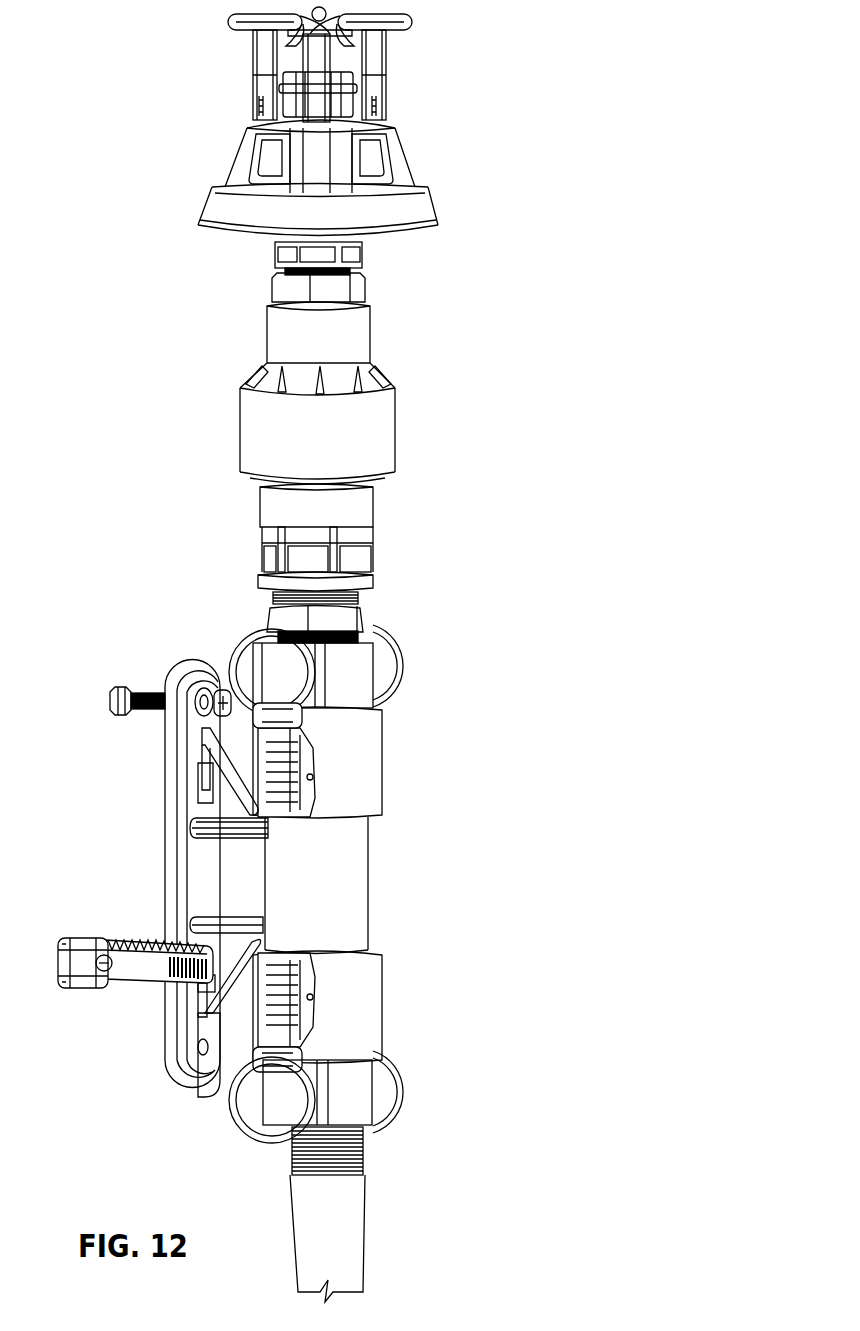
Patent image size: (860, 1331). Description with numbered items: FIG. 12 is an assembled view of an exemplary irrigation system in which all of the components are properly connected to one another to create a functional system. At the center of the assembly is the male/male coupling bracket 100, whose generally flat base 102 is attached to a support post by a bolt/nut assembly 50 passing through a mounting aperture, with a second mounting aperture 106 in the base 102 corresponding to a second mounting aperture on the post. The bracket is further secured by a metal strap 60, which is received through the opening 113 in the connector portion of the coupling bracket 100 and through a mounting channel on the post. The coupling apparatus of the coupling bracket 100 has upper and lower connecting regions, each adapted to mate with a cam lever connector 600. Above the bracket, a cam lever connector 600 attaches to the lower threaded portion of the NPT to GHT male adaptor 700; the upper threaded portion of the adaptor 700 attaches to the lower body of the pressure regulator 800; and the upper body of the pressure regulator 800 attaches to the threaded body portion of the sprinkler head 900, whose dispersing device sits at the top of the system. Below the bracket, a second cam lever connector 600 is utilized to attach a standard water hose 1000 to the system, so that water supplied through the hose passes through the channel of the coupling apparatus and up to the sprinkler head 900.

The sprinkler head 900 is at (452, 182).
The pressure regulator 800 is at (437, 387).
The NPT to GHT male adaptor 700 is at (389, 603).
The cam lever connector 600 is at (397, 743).
The coupling bracket 100 is at (389, 855).
The water hose 1000 is at (369, 1228).
The base 102 is at (172, 838).
The second mounting aperture 106 is at (207, 1052).
The opening 113 is at (207, 984).
The strap 60 is at (108, 935).
The bolt/nut assembly 50 is at (128, 687).